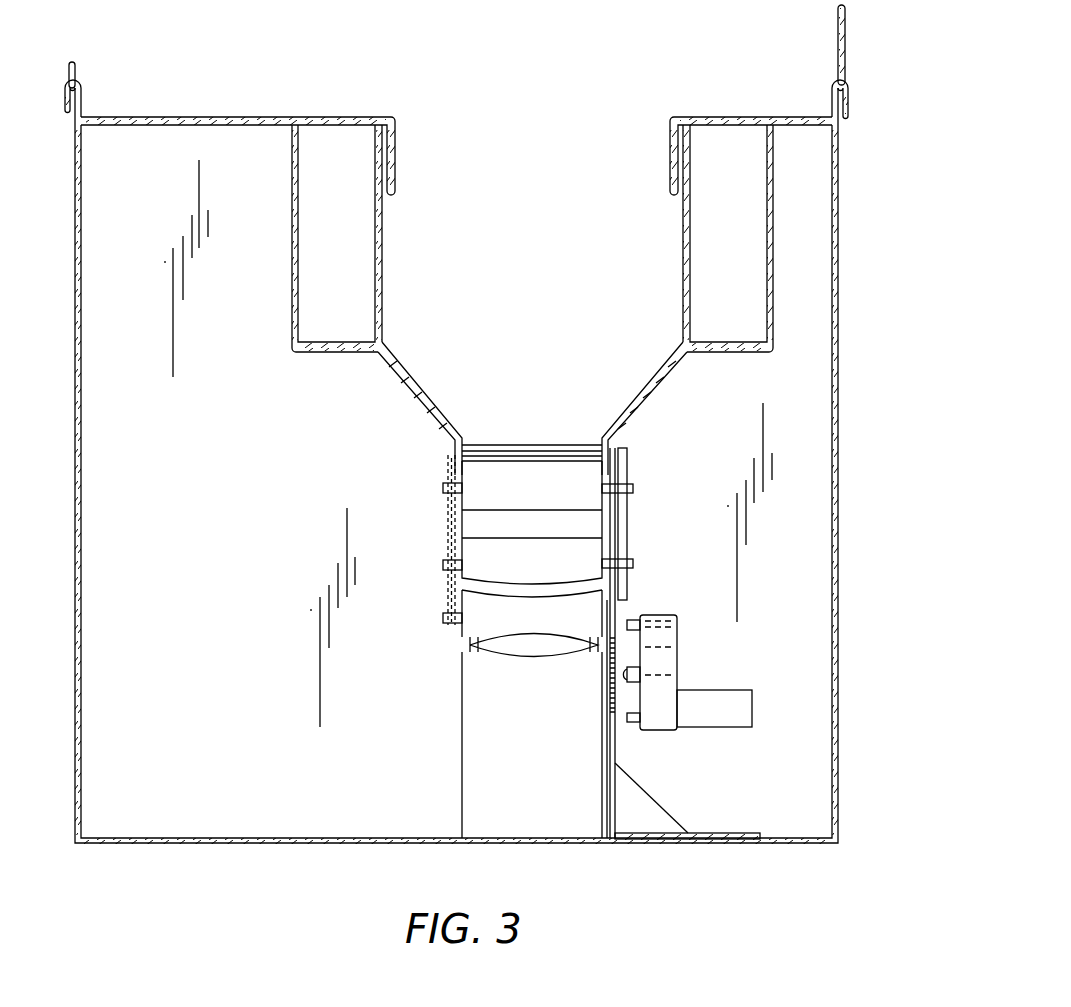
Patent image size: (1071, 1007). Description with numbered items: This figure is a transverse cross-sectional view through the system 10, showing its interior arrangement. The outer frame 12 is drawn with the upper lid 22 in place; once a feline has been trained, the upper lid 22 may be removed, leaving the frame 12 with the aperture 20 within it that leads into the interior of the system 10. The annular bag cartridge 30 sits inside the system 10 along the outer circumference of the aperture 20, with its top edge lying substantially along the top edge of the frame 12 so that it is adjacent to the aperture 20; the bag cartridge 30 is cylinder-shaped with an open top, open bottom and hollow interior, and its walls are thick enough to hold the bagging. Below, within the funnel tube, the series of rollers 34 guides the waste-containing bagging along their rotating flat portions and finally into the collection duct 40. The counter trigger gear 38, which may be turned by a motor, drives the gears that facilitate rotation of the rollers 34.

The system 10 is at (341, 37).
The frame 12 is at (838, 437).
The aperture 20 is at (524, 153).
The upper lid 22 is at (163, 117).
The bag cartridge 30 is at (345, 248).
The series of rollers 34 is at (487, 480).
The counter trigger gear 38 is at (630, 515).
The collection duct 40 is at (717, 661).